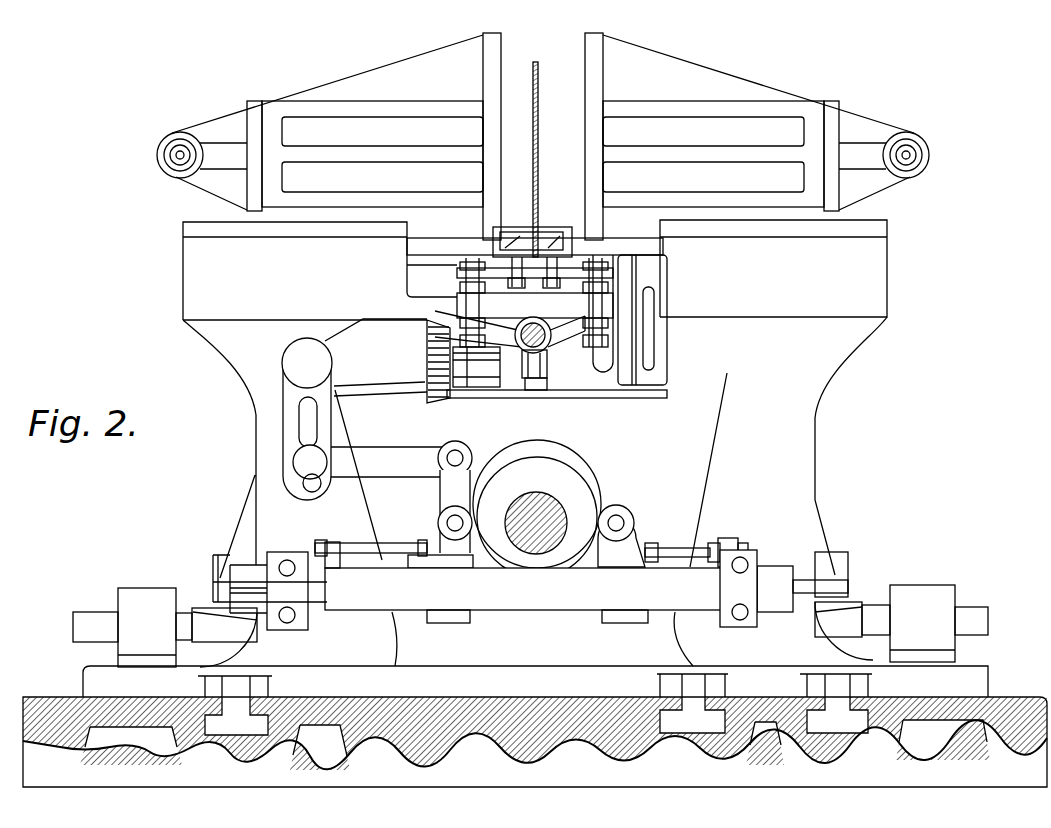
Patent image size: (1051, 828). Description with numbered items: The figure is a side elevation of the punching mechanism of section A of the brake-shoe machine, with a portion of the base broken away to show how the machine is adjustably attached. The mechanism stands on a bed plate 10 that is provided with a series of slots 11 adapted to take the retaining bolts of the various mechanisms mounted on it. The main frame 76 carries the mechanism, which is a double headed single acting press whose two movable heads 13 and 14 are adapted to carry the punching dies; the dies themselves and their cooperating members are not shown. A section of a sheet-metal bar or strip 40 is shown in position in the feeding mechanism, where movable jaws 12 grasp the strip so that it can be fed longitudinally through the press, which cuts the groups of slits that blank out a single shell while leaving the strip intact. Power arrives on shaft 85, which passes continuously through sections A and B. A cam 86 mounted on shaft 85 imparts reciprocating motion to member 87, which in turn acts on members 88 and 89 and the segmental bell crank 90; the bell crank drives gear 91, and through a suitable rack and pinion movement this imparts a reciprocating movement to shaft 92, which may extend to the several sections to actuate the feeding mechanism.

The bed plate 10 is at (58, 715).
The slots 11 is at (238, 725).
The movable jaws 12 is at (520, 245).
The movable head 13 is at (668, 91).
The movable head 14 is at (347, 80).
The strip 40 is at (562, 53).
The main frame 76 is at (238, 335).
The shaft 85 is at (527, 508).
The cam 86 is at (567, 478).
The reciprocating member 87 is at (560, 592).
The member 88 is at (455, 497).
The member 89 is at (415, 460).
The segmental bell crank 90 is at (354, 409).
The gear 91 is at (437, 380).
The shaft 92 is at (500, 325).